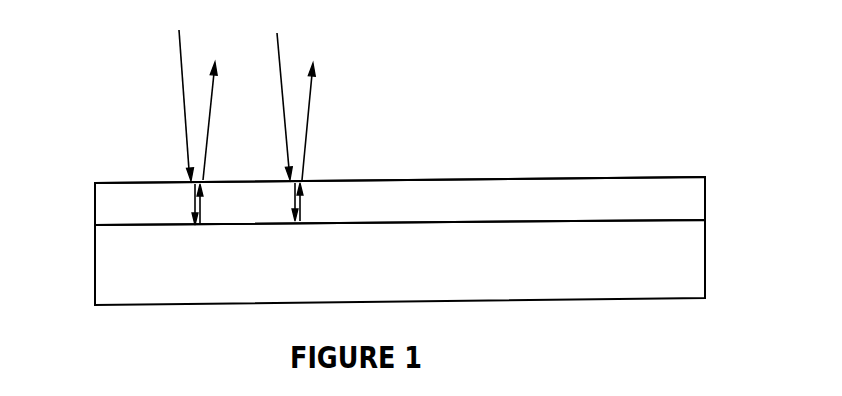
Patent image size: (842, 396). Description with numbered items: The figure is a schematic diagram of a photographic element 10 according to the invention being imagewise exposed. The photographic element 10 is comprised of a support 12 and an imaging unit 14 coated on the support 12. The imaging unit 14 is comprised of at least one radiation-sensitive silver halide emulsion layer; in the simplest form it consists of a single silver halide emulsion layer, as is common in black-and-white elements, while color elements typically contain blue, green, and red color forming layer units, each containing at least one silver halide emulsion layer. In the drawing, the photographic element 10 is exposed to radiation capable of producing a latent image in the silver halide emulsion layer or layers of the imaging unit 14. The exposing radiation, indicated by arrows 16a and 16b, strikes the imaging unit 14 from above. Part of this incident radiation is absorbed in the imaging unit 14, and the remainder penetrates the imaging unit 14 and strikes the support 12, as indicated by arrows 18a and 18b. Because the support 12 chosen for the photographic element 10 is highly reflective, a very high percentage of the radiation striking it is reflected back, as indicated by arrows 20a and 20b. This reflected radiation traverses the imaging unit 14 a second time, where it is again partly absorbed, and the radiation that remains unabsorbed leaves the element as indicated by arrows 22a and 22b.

The photographic element 10 is at (719, 232).
The support 12 is at (95, 257).
The imaging unit 14 is at (95, 205).
The arrow indicating exposing radiation 16a is at (182, 70).
The arrow indicating exposing radiation 16b is at (279, 63).
The arrow indicating radiation penetrating the imaging unit 18a is at (195, 193).
The arrow indicating radiation penetrating the imaging unit 18b is at (295, 193).
The arrow indicating reflected radiation 20a is at (201, 197).
The arrow indicating reflected radiation 20b is at (303, 197).
The arrow indicating unabsorbed radiation 22a is at (208, 129).
The arrow indicating unabsorbed radiation 22b is at (307, 129).